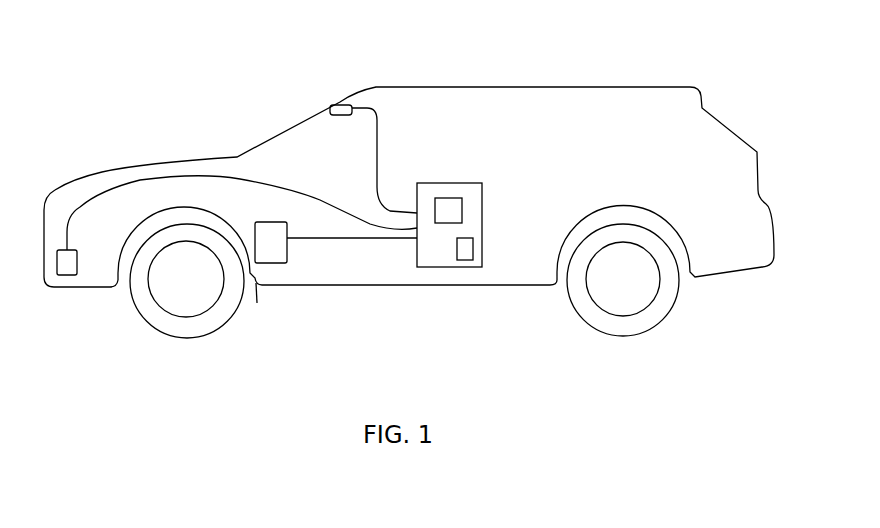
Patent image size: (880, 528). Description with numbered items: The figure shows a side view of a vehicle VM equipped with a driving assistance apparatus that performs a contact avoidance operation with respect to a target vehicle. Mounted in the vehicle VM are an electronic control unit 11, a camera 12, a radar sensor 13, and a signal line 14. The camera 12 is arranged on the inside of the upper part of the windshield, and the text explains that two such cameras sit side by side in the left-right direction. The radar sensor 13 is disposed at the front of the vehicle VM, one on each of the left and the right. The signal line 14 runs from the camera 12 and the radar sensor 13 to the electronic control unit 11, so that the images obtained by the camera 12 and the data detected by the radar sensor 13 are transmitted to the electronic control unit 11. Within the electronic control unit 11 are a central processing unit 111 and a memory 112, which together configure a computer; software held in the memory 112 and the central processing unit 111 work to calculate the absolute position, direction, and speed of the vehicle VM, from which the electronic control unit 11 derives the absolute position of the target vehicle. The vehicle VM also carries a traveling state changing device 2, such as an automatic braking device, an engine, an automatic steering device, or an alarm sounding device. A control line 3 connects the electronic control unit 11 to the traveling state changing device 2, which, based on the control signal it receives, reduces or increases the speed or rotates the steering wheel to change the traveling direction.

The vehicle VM is at (529, 70).
The electronic control unit 11 is at (450, 193).
The central processing unit 111 is at (452, 212).
The memory 112 is at (467, 253).
The camera 12 is at (337, 102).
The radar sensor 13 is at (67, 277).
The signal line 14 is at (297, 189).
The traveling state changing device 2 is at (268, 252).
The control line 3 is at (340, 238).